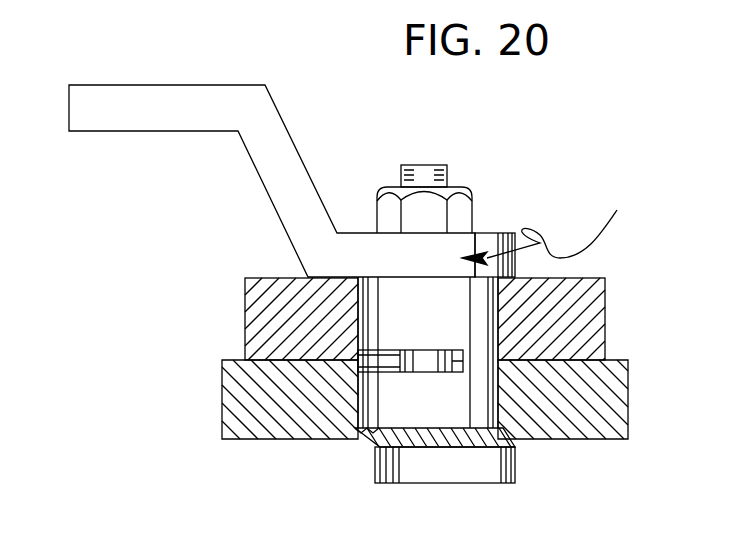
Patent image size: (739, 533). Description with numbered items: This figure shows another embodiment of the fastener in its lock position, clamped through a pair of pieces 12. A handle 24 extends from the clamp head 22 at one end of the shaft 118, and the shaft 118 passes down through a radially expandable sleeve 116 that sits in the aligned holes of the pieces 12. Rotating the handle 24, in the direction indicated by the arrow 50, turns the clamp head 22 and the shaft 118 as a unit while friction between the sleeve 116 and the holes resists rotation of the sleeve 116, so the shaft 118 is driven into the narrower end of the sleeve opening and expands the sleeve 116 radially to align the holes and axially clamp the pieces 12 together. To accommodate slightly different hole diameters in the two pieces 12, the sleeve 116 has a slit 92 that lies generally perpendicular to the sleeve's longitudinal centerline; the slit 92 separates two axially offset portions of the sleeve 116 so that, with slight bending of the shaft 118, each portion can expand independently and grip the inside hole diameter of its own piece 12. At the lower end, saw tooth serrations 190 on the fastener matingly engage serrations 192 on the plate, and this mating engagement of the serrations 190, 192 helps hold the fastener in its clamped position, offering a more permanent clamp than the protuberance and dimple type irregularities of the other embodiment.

The handle 24 is at (163, 132).
The clamp head 22 is at (487, 233).
The arrow 50 is at (546, 224).
The piece 12 is at (245, 297).
The shaft 118 is at (427, 360).
The slit 92 is at (388, 373).
The sleeve 116 is at (357, 398).
The serrations 192 is at (367, 437).
The serrations 190 is at (500, 428).